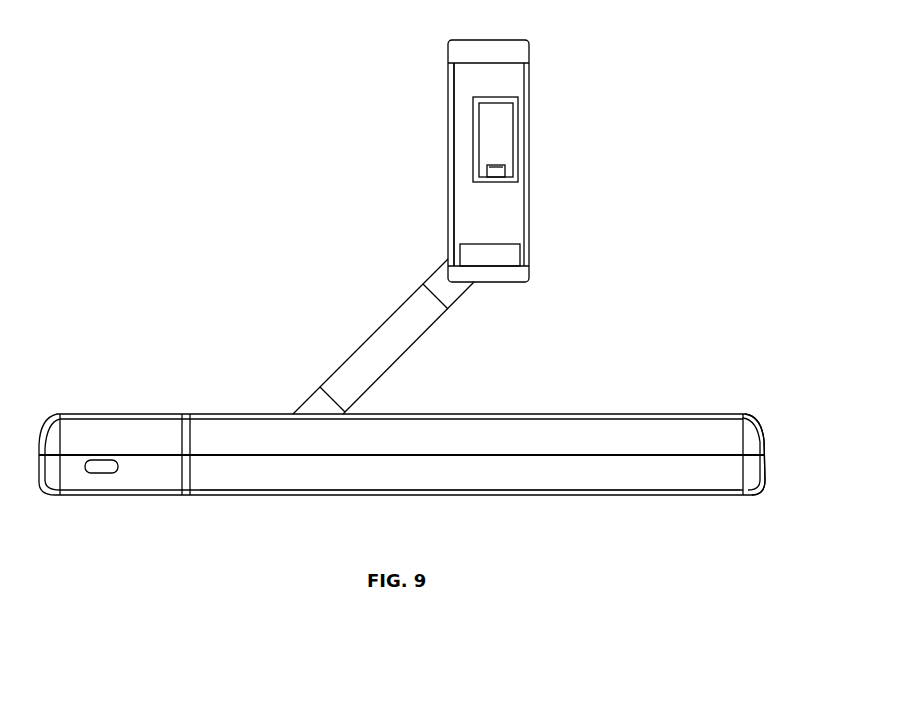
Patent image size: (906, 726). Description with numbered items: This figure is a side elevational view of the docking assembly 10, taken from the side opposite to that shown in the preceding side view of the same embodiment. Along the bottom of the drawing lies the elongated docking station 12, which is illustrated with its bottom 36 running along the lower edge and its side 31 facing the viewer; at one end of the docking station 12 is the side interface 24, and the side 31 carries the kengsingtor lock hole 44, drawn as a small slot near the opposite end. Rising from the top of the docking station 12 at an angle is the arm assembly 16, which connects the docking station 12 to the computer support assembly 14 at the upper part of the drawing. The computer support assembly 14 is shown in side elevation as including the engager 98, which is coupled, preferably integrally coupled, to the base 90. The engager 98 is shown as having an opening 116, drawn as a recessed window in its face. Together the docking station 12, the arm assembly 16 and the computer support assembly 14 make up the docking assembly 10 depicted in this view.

The docking assembly 10 is at (647, 64).
The docking station 12 is at (575, 353).
The computer support assembly 14 is at (546, 187).
The arm assembly 16 is at (365, 330).
The side interface 24 is at (758, 418).
The side 31 is at (336, 478).
The bottom 36 is at (525, 495).
The kengsingtor lock hole 44 is at (108, 466).
The base 90 is at (518, 228).
The engager 98 is at (448, 125).
The opening 116 is at (506, 134).